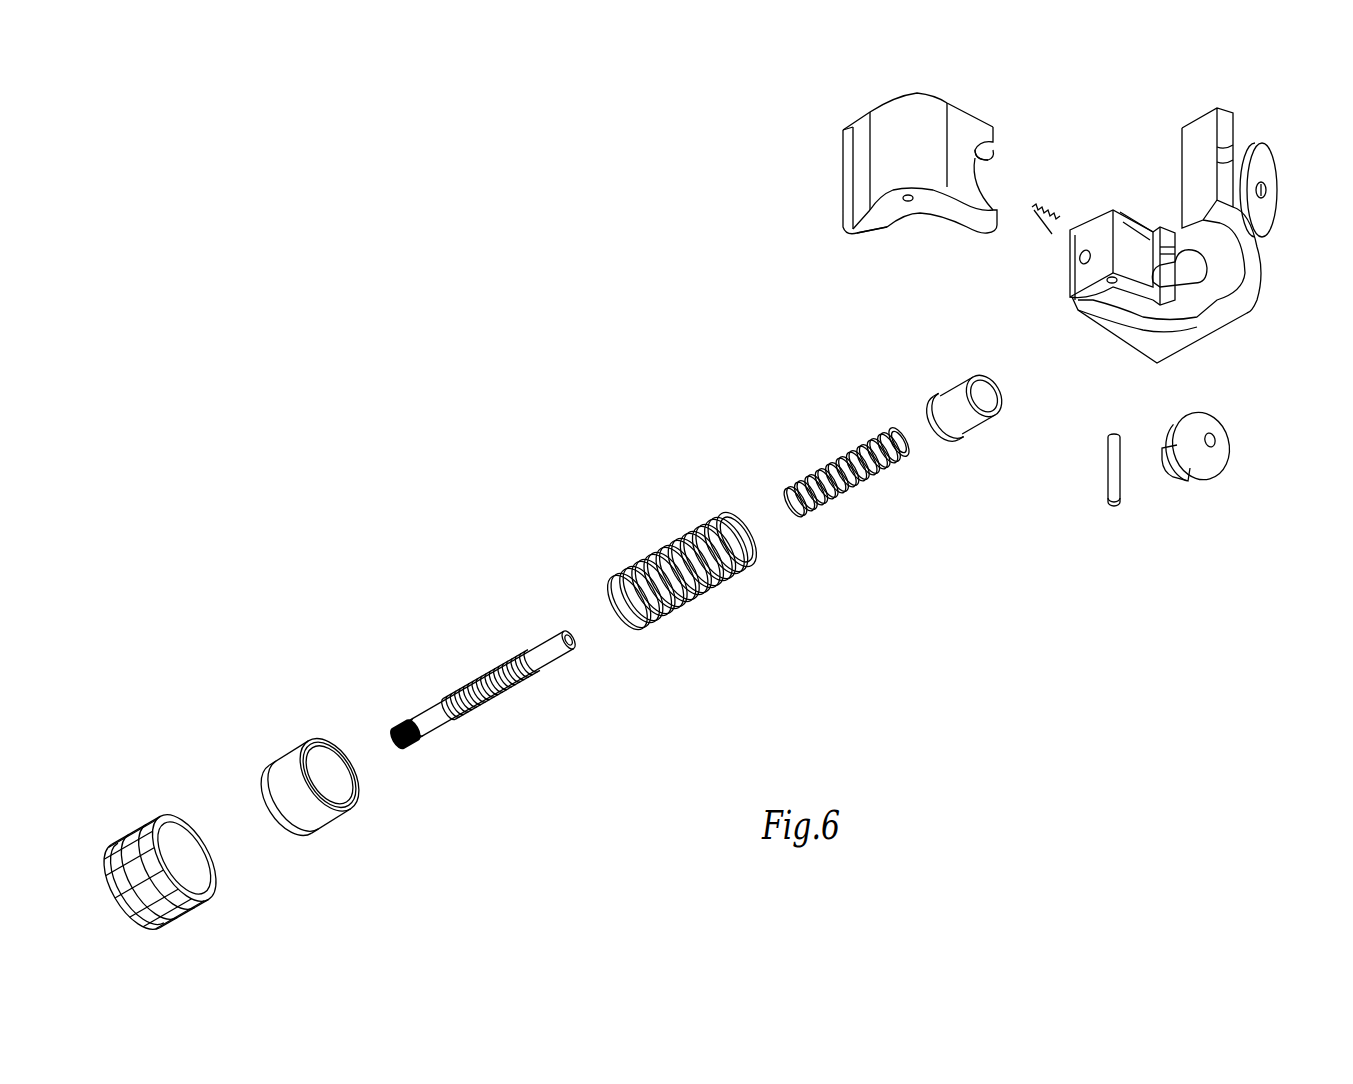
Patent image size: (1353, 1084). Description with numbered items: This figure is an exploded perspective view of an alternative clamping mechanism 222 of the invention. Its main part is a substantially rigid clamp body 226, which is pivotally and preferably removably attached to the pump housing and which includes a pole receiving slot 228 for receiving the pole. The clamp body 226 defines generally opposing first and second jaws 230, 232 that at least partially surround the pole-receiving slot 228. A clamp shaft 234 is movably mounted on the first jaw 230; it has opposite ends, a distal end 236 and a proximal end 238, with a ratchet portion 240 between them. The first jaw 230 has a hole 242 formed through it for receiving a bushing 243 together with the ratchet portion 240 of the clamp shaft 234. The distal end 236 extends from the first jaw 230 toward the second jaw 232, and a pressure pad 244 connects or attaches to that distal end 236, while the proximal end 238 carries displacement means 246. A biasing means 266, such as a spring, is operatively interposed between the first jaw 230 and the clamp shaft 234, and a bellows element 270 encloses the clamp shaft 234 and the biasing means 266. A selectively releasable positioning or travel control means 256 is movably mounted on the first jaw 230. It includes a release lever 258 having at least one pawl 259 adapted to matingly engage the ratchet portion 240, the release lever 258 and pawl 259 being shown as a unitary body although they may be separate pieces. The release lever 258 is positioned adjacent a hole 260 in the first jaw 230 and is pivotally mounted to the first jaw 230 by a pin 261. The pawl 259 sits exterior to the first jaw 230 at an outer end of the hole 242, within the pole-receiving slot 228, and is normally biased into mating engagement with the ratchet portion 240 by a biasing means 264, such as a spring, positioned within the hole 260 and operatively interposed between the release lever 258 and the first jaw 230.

The clamping mechanism 222 is at (665, 398).
The clamp body 226 is at (1169, 250).
The pole receiving slot 228 is at (1215, 305).
The first jaw 230 is at (1084, 257).
The second jaw 232 is at (1180, 150).
The clamp shaft 234 is at (458, 689).
The distal end 236 is at (570, 645).
The proximal end 238 is at (400, 730).
The ratchet portion 240 is at (499, 688).
The hole 242 is at (1159, 245).
The bushing 243 is at (953, 393).
The pressure pad 244 is at (1218, 428).
The displacement means 246 is at (322, 720).
The travel control means 256 is at (928, 173).
The release lever 258 is at (860, 235).
The pawl 259 is at (993, 152).
The hole 260 is at (1086, 250).
The pin 261 is at (1108, 468).
The biasing means 264 is at (1047, 232).
The biasing means 266 is at (840, 468).
The bellows element 270 is at (670, 553).